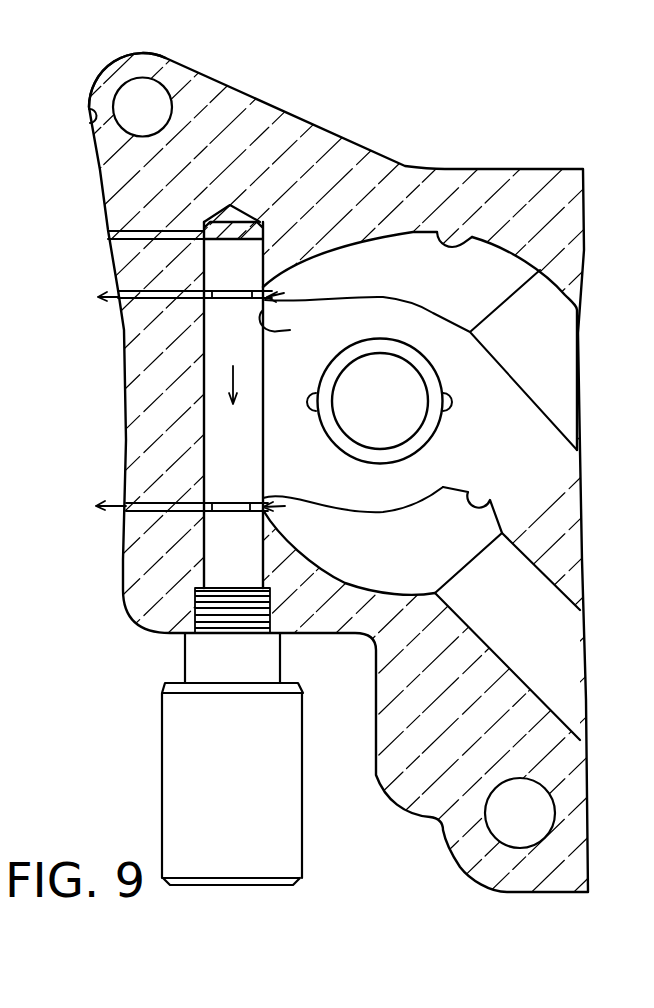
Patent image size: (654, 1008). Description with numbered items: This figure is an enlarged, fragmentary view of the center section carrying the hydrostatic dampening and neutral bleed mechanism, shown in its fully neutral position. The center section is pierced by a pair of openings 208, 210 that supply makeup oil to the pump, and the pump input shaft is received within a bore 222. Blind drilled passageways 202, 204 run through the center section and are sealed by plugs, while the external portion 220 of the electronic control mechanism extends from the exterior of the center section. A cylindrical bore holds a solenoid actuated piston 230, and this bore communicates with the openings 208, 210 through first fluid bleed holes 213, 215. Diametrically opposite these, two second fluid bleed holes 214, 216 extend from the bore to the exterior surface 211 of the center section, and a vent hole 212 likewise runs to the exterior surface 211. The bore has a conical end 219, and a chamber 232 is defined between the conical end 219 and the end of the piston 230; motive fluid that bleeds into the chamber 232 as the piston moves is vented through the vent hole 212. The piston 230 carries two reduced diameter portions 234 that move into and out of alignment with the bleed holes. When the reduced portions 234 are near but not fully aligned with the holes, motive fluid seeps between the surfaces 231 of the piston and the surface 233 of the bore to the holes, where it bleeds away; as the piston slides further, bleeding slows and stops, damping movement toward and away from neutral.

The blind drilled passageway 202 is at (557, 347).
The blind drilled passageway 204 is at (533, 630).
The opening 208 is at (487, 500).
The opening 210 is at (460, 240).
The exterior surface 211 is at (90, 115).
The vent hole 212 is at (110, 233).
The first fluid bleed hole 213 is at (270, 290).
The second fluid bleed hole 214 is at (118, 292).
The first fluid bleed hole 215 is at (264, 506).
The second fluid bleed hole 216 is at (126, 505).
The conical end 219 is at (232, 213).
The external portion of the electronic control mechanism 220 is at (177, 752).
The bore 222 is at (428, 397).
The solenoid actuated piston 230 is at (222, 442).
The surface of piston 231 is at (250, 349).
The chamber 232 is at (264, 216).
The surface of bore 233 is at (340, 344).
The reduced diameter portion 234 is at (208, 297).